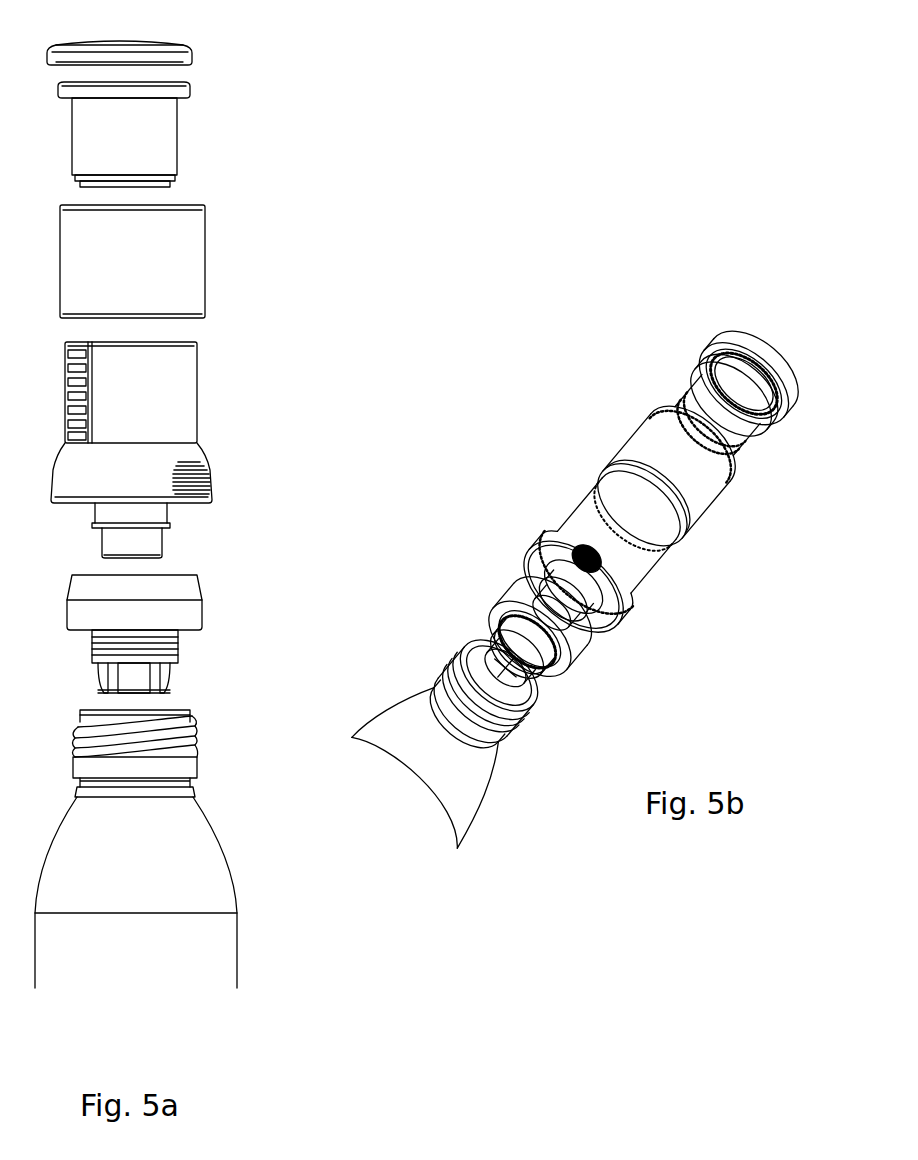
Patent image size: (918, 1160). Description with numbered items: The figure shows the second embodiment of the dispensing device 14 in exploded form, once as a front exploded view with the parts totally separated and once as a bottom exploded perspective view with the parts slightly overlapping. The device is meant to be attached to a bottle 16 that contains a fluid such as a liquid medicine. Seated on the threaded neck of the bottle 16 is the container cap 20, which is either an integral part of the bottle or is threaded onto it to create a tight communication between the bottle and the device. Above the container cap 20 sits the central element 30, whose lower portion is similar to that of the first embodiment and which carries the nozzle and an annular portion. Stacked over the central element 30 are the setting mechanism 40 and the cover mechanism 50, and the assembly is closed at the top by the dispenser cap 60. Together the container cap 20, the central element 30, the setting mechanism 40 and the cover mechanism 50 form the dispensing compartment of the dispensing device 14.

In FIG. 5A, the dispensing device 14 is at (331, 284).
In FIG. 5B, the dispensing device 14 is at (568, 364).
In FIG. 5A, the bottle 16 is at (237, 923).
In FIG. 5A, the container cap 20 is at (202, 603).
In FIG. 5B, the container cap 20 is at (502, 600).
In FIG. 5A, the central element 30 is at (197, 408).
In FIG. 5B, the central element 30 is at (587, 497).
In FIG. 5A, the setting mechanism 40 is at (202, 240).
In FIG. 5B, the setting mechanism 40 is at (710, 503).
In FIG. 5A, the cover mechanism 50 is at (177, 120).
In FIG. 5B, the cover mechanism 50 is at (687, 395).
In FIG. 5A, the dispenser cap 60 is at (192, 55).
In FIG. 5B, the dispenser cap 60 is at (733, 338).